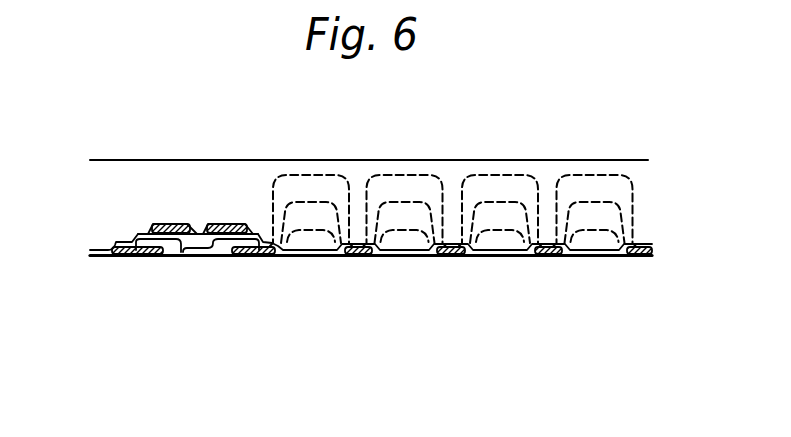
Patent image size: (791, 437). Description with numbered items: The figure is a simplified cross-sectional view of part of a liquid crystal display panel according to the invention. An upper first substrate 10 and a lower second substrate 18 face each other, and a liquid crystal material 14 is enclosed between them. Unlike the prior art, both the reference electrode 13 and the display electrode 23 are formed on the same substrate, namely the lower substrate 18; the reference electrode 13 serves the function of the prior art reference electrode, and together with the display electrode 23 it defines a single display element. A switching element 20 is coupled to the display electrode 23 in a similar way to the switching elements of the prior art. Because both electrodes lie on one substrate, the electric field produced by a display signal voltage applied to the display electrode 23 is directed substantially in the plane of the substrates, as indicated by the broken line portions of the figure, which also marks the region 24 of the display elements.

The first substrate 10 is at (582, 132).
The liquid crystal material 14 is at (127, 228).
The second substrate 18 is at (605, 289).
The switching element 20 is at (273, 272).
The display cell region 24 is at (275, 147).
The display electrode 23 is at (643, 255).
The reference electrode 13 is at (368, 255).